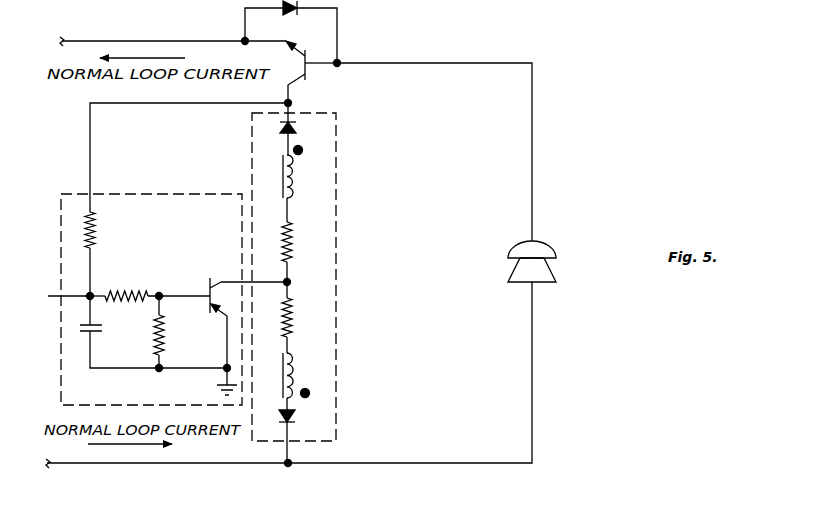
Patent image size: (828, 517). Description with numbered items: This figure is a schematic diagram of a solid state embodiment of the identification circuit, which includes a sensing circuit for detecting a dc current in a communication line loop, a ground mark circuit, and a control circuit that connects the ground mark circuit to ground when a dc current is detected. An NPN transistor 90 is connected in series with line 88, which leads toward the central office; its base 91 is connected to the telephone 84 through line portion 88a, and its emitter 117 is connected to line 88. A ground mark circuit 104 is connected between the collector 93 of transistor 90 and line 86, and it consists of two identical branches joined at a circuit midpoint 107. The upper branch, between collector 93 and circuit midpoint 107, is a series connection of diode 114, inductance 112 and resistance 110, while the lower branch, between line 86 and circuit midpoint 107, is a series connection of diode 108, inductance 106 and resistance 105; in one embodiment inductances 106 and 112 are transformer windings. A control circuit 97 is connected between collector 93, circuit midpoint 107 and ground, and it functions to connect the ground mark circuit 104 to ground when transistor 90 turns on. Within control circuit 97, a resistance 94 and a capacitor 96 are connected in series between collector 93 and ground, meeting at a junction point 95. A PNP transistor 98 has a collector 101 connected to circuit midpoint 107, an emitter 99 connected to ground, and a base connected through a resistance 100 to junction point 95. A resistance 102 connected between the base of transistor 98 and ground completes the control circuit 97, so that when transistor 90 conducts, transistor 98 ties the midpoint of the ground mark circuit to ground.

The telephone 84 is at (555, 250).
The line 86 is at (403, 463).
The line 88 is at (193, 40).
The line portion 88a is at (483, 63).
The NPN transistor 90 is at (286, 66).
The base 91 is at (305, 52).
The collector 93 is at (297, 82).
The resistance 94 is at (96, 228).
The junction point 95 is at (60, 297).
The capacitor 96 is at (68, 334).
The control circuit 97 is at (178, 188).
The PNP transistor 98 is at (197, 284).
The emitter 99 is at (220, 322).
The resistance 100 is at (122, 290).
The collector 101 is at (221, 279).
The resistance 102 is at (156, 328).
The ground mark circuit 104 is at (336, 232).
The resistance 105 is at (293, 316).
The inductance 106 is at (293, 378).
The circuit midpoint 107 is at (291, 283).
The diode 108 is at (295, 419).
The resistance 110 is at (292, 236).
The inductance 112 is at (293, 180).
The diode 114 is at (289, 127).
The emitter 117 is at (283, 38).